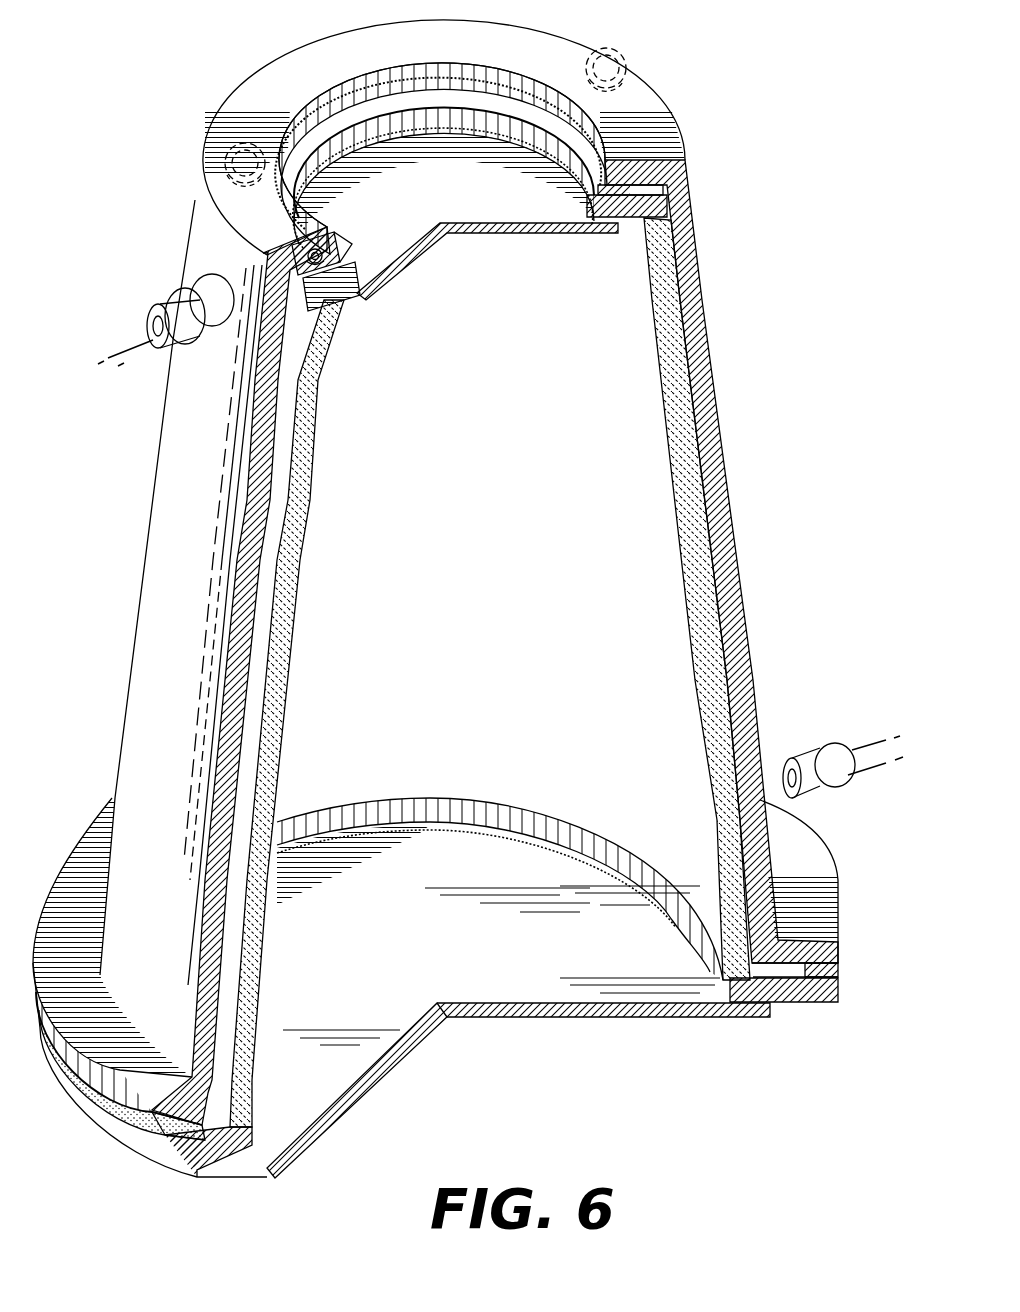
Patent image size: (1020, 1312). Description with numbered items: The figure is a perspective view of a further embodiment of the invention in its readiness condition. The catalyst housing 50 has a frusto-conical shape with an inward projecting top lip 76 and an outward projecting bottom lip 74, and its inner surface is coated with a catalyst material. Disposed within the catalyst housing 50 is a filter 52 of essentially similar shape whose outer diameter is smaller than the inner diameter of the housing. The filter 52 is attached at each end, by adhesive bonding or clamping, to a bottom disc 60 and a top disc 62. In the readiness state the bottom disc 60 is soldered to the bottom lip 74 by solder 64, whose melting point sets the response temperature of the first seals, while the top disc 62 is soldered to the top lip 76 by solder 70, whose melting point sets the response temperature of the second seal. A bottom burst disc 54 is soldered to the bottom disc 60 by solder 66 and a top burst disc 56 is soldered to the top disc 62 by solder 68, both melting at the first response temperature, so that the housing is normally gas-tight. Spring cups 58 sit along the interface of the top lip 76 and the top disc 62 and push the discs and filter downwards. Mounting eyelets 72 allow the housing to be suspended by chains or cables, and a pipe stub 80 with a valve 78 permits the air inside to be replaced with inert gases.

The catalyst housing 50 is at (700, 256).
The filter 52 is at (650, 318).
The bottom burst disc 54 is at (486, 975).
The top burst disc 56 is at (450, 208).
The spring cups 58 is at (318, 236).
The bottom disc 60 is at (218, 1165).
The top disc 62 is at (352, 254).
The solder 64 is at (168, 1130).
The solder 66 is at (712, 944).
The solder 68 is at (357, 297).
The solder 70 is at (324, 250).
The mounting eyelets 72 is at (222, 148).
The bottom lip 74 is at (137, 1078).
The top lip 76 is at (268, 212).
The valve 78 is at (190, 300).
The pipe stub 80 is at (214, 280).